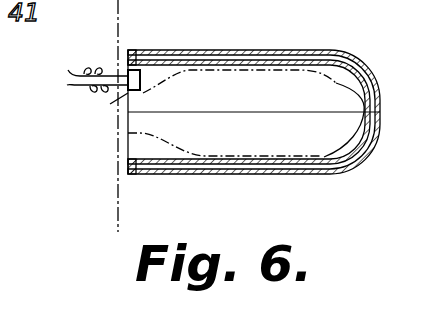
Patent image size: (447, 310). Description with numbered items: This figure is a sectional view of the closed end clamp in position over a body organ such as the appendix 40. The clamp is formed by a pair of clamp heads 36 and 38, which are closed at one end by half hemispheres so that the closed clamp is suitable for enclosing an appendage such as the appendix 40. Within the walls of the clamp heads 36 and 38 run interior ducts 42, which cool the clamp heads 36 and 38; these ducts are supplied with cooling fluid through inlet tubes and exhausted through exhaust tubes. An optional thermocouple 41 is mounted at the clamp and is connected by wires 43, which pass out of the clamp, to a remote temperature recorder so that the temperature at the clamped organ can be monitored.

The clamp head 36 is at (184, 51).
The clamp head 38 is at (231, 175).
The appendix 40 is at (289, 139).
The thermocouple 41 is at (128, 72).
The interior ducts 42 is at (269, 58).
The wires 43 is at (70, 73).